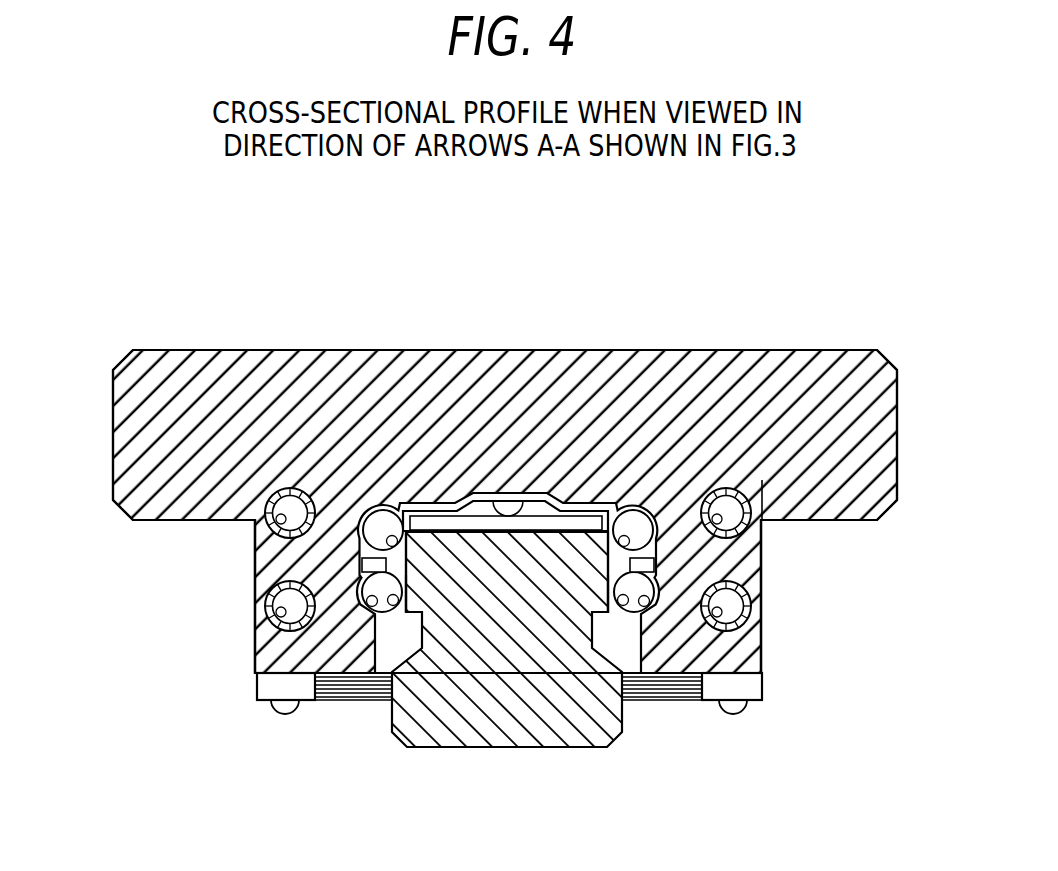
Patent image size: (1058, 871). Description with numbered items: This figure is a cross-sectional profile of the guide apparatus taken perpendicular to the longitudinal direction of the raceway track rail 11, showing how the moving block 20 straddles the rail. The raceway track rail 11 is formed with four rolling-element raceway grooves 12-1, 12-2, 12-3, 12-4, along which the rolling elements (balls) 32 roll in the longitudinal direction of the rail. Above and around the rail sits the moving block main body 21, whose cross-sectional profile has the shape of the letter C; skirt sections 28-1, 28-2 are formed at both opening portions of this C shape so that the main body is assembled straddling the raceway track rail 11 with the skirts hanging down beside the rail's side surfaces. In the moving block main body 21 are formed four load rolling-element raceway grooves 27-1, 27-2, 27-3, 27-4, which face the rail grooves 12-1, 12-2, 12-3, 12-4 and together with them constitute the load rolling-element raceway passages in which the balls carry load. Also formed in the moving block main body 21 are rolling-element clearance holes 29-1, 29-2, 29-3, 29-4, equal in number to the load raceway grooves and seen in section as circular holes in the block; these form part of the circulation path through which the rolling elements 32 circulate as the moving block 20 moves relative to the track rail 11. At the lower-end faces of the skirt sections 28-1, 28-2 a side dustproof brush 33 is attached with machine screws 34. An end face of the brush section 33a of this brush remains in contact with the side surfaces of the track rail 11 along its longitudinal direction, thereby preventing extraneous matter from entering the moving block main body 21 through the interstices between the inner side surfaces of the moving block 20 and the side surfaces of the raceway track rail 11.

The moving block 20 is at (468, 318).
The moving block main body 21 is at (545, 375).
The raceway track rail 11 is at (503, 762).
The rolling-element raceway groove 12-1 is at (610, 535).
The rolling-element raceway groove 12-2 is at (608, 614).
The rolling-element raceway groove 12-3 is at (405, 535).
The rolling-element raceway groove 12-4 is at (408, 614).
The load rolling-element raceway groove 27-1 is at (652, 512).
The load rolling-element raceway groove 27-2 is at (648, 606).
The load rolling-element raceway groove 27-3 is at (364, 512).
The load rolling-element raceway groove 27-4 is at (368, 606).
The skirt section 28-1 is at (710, 578).
The skirt section 28-2 is at (310, 578).
The rolling-element clearance hole 29-1 is at (752, 512).
The rolling-element clearance hole 29-2 is at (750, 620).
The rolling-element clearance hole 29-3 is at (265, 513).
The rolling-element clearance hole 29-4 is at (268, 616).
The rolling elements (balls) 32 is at (358, 566).
The side dustproof brush 33 is at (257, 687).
The brush section 33a is at (345, 702).
The machine screw 34 is at (272, 712).